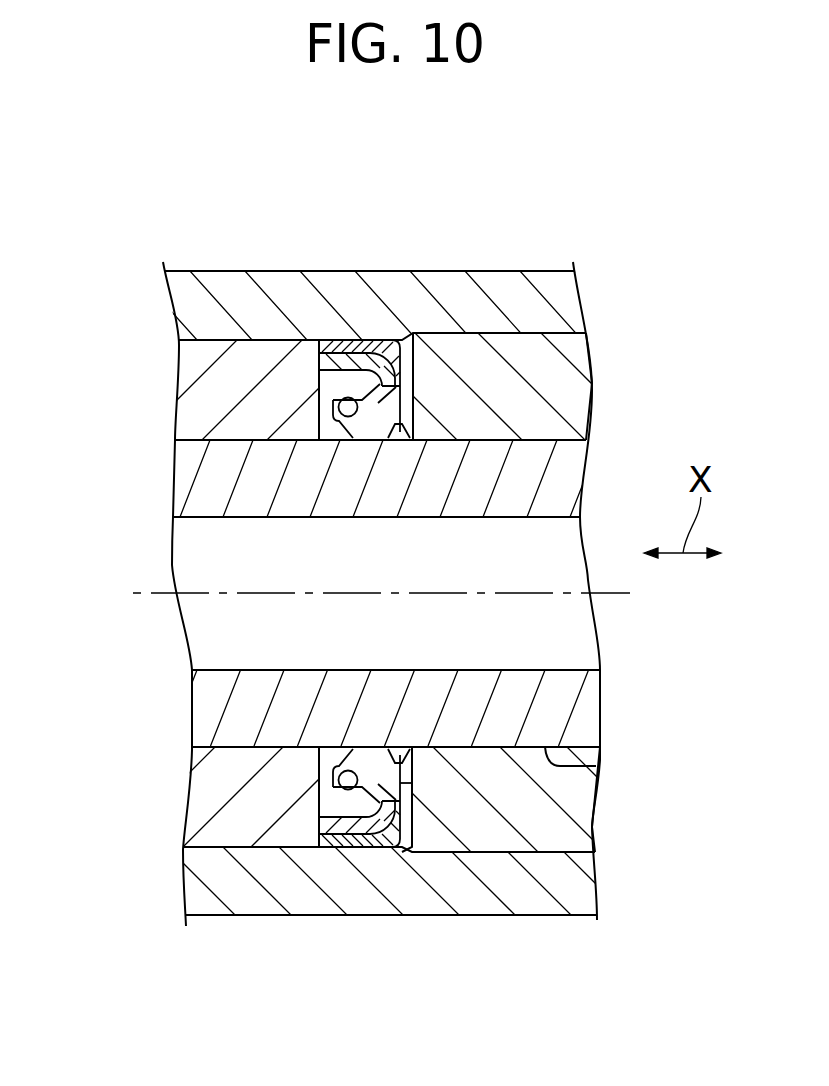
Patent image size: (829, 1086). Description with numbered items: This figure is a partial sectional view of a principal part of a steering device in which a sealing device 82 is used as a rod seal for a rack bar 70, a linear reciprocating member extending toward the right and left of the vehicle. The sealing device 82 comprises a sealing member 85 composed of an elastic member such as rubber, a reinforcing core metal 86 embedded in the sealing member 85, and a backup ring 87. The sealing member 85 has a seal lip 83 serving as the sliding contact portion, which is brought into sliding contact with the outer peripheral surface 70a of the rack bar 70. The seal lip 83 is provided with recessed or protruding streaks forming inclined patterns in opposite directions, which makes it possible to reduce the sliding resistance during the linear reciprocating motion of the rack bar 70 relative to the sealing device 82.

The rack bar 70 is at (488, 747).
The outer peripheral surface 70a is at (596, 766).
The sealing device 82 is at (360, 847).
The seal lip 83 is at (357, 750).
The sealing member 85 is at (369, 342).
The reinforcing core metal 86 is at (345, 357).
The backup ring 87 is at (350, 406).